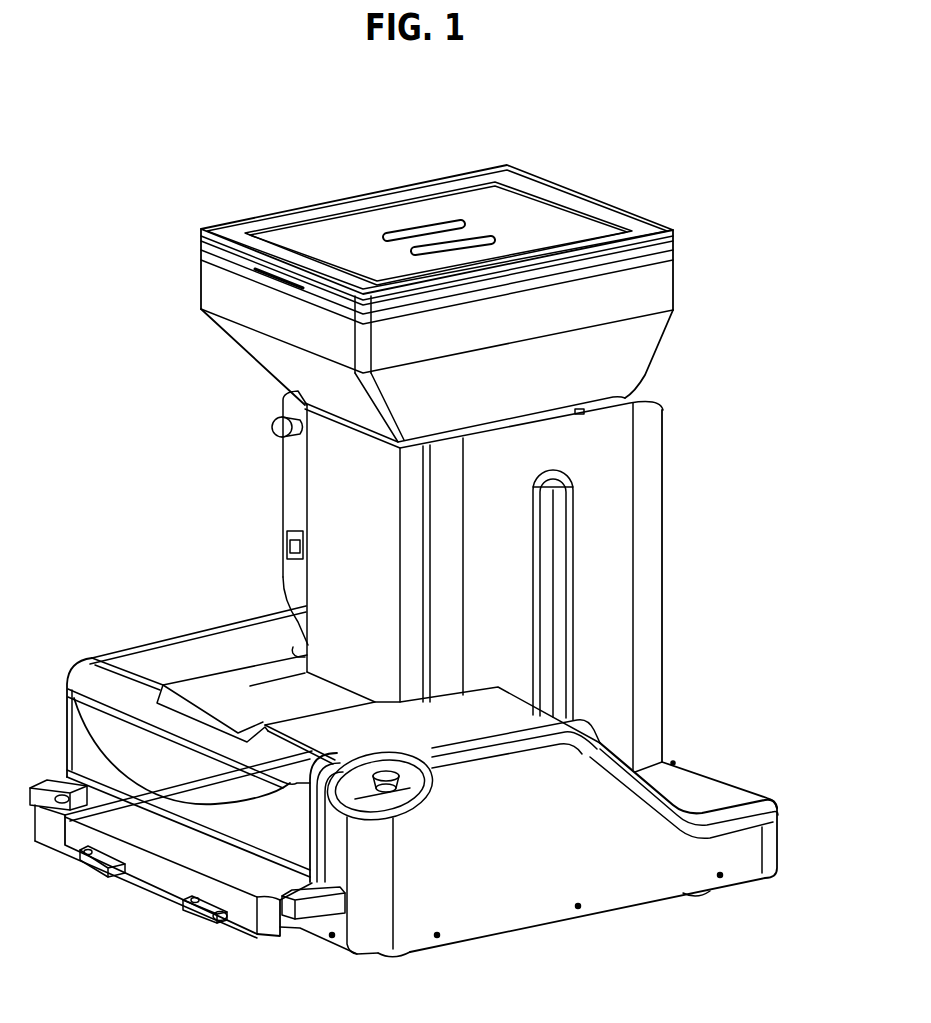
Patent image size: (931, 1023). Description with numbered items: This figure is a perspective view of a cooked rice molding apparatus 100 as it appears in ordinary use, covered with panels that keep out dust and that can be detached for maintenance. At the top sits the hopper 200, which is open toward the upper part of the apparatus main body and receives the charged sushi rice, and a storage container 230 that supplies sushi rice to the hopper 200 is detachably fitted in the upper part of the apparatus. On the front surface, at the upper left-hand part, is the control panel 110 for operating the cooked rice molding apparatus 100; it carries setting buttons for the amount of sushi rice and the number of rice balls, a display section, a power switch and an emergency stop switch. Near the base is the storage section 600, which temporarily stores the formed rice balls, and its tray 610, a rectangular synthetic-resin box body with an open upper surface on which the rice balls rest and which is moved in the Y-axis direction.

The cooked rice molding apparatus 100 is at (712, 552).
The control panel 110 is at (297, 487).
The hopper 200 is at (707, 274).
The storage container 230 is at (627, 350).
The storage section 600 is at (175, 915).
The tray 610 is at (152, 867).